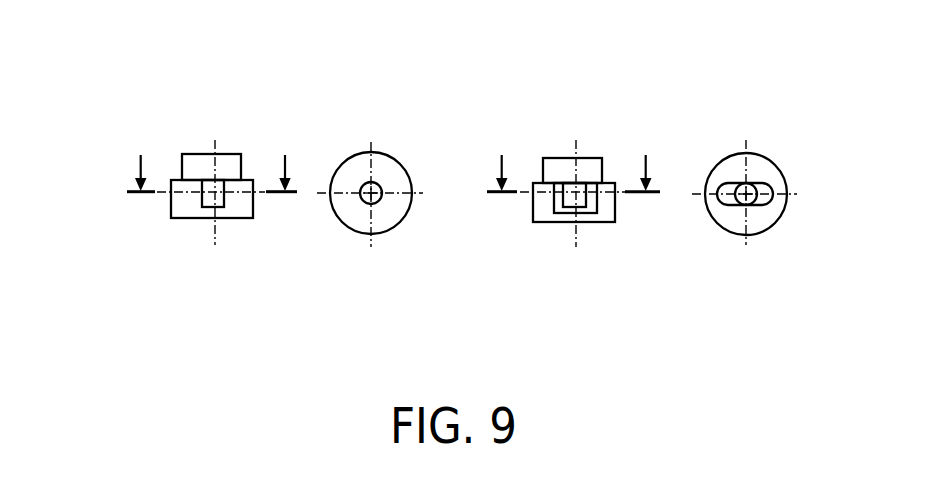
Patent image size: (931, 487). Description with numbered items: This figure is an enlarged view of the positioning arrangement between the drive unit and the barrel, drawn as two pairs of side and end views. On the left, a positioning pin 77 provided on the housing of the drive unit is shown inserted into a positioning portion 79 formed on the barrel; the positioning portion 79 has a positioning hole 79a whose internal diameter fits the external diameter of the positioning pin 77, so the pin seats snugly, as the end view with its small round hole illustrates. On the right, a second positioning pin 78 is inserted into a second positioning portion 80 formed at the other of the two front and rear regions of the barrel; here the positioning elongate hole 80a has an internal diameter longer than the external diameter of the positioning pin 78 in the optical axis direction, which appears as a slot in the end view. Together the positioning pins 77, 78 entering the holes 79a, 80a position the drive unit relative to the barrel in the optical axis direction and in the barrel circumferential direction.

The positioning pin 77 is at (201, 180).
The positioning pin 78 is at (563, 183).
The positioning portion 79 is at (355, 232).
The positioning hole 79a is at (202, 207).
The positioning portion 80 is at (735, 235).
The positioning elongate hole 80a is at (553, 213).